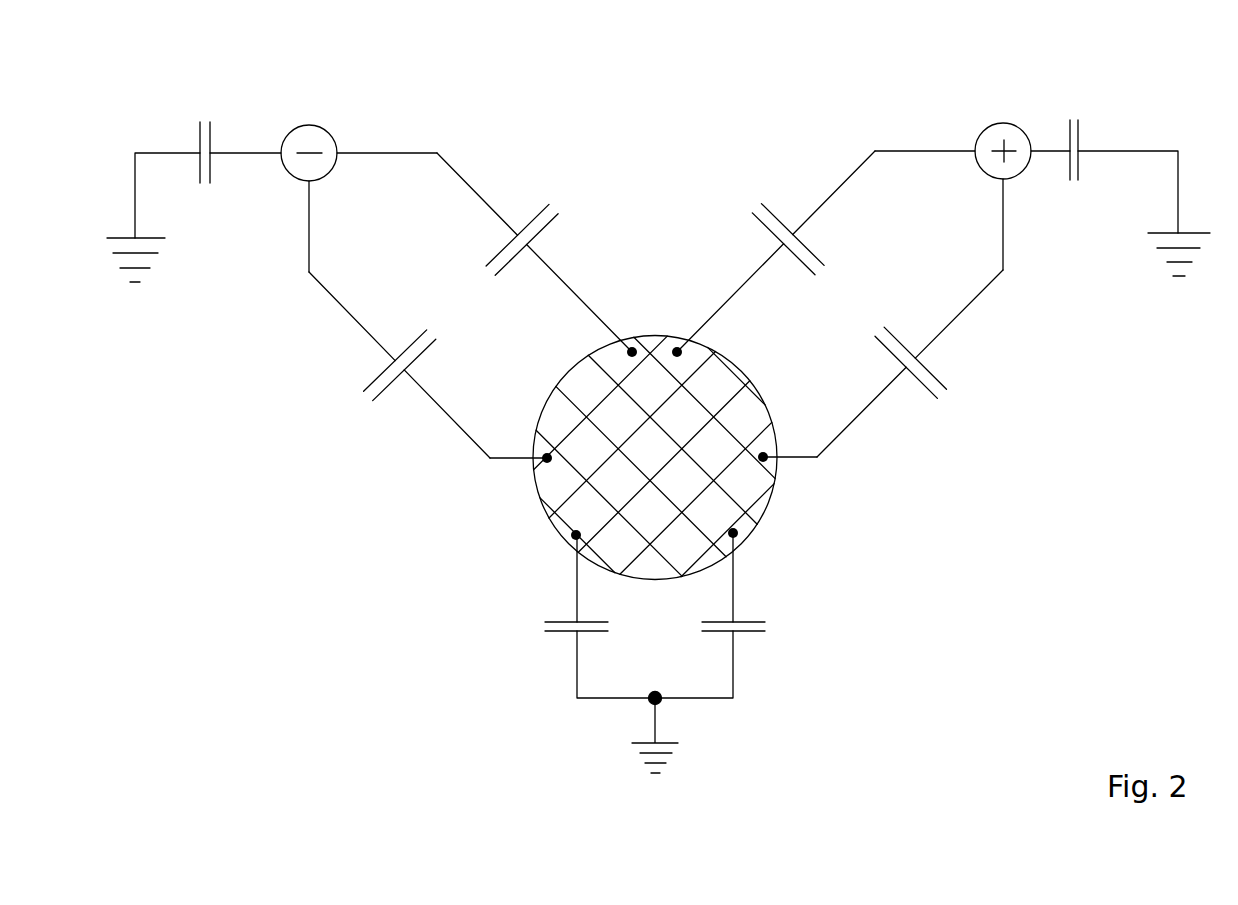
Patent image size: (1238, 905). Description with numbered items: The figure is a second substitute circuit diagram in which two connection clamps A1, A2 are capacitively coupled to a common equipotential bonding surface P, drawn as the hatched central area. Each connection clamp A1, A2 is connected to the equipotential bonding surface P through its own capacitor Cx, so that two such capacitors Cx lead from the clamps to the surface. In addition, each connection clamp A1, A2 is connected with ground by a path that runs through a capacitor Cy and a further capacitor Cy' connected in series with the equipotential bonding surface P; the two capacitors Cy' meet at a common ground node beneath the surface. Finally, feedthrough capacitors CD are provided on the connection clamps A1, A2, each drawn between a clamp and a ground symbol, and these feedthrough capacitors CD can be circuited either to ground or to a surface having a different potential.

The connection clamp A1 is at (1003, 130).
The connection clamp A2 is at (309, 132).
The feedthrough capacitor CD is at (664, 174).
The capacitor Cx is at (656, 249).
The capacitor Cy is at (656, 364).
The capacitor Cy' is at (664, 647).
The equipotential bonding surface P is at (655, 458).